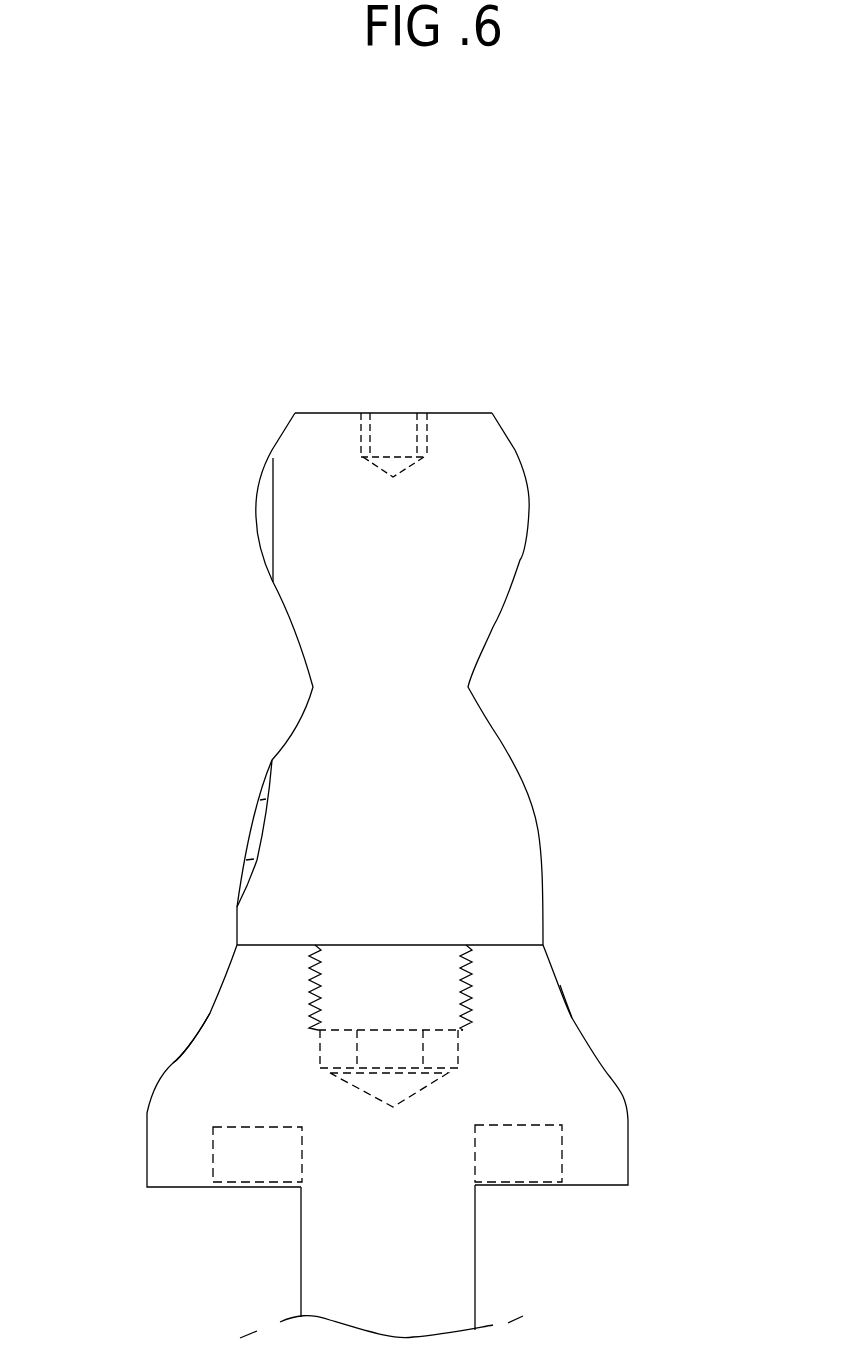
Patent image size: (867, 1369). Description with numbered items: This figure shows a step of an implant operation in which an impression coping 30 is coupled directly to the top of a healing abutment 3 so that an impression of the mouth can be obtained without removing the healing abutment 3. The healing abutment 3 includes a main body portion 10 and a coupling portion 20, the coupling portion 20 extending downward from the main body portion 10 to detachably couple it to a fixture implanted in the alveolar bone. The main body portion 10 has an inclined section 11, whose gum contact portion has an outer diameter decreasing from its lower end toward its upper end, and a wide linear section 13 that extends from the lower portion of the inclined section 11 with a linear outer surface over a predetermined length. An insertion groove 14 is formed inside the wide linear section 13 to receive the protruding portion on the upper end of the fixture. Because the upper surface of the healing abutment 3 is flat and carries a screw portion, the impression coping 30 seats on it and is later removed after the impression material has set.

The healing abutment 3 is at (147, 1057).
The main body portion 10 is at (620, 1085).
The inclined section 11 is at (572, 1018).
The wide linear section 13 is at (628, 1153).
The insertion groove 14 is at (250, 1157).
The coupling portion 20 is at (475, 1259).
The impression coping 30 is at (498, 735).